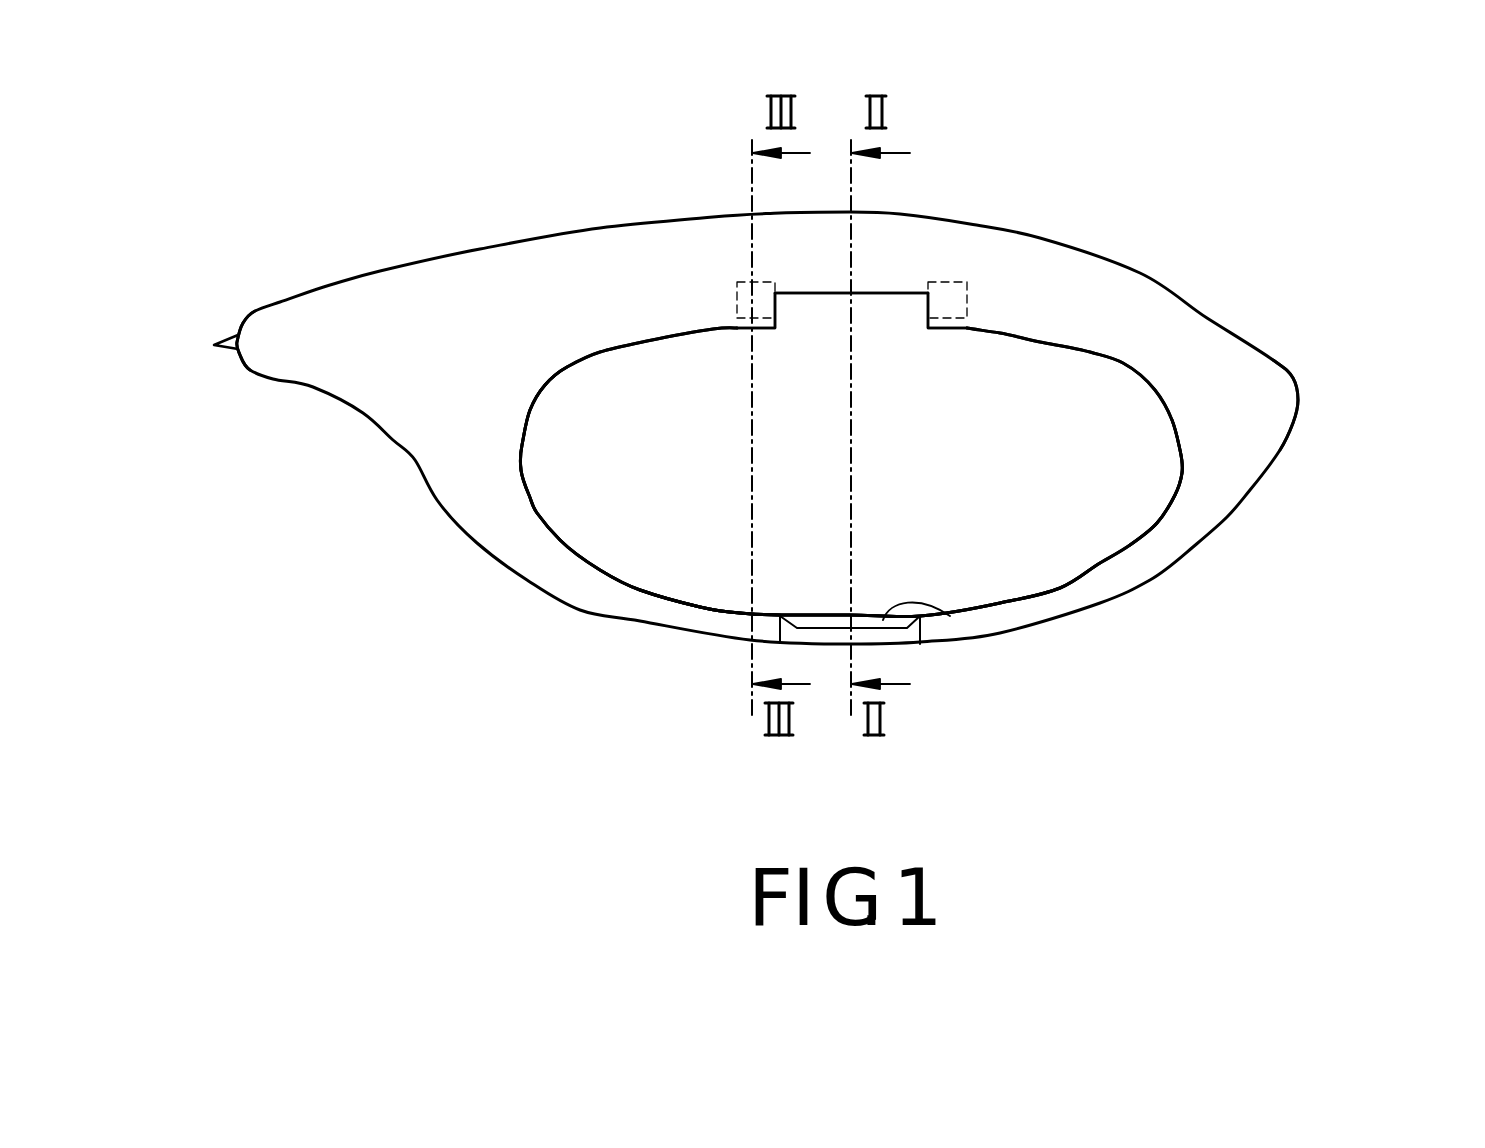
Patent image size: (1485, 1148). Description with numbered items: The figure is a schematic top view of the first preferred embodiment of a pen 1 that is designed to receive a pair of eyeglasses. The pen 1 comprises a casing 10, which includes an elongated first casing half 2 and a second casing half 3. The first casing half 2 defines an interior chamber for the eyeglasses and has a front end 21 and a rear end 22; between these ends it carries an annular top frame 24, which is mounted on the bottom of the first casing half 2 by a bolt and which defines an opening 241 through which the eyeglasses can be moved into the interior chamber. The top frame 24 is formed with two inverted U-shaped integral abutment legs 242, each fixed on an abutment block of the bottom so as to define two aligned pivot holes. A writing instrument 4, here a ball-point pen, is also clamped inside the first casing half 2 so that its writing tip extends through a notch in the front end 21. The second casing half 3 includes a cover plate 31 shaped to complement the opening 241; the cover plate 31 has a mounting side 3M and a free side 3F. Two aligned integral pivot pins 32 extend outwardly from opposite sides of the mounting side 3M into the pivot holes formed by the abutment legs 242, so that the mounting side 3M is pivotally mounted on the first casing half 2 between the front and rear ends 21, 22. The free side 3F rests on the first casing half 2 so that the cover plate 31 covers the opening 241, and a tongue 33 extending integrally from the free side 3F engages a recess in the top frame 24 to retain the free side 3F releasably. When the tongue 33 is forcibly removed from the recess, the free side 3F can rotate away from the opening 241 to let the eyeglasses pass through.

The pen 1 is at (803, 417).
The casing 10 is at (1137, 302).
The first casing half 2 is at (483, 213).
The front end 21 is at (241, 362).
The rear end 22 is at (1280, 388).
The annular top frame 24 is at (438, 423).
The opening 241 is at (1182, 473).
The abutment legs 242 is at (738, 283).
The second casing half 3 is at (1093, 502).
The cover plate 31 is at (667, 572).
The pivot pins 32 is at (735, 307).
The tongue 33 is at (950, 616).
The mounting side 3M is at (887, 317).
The free side 3F is at (877, 573).
The writing instrument 4 is at (230, 335).